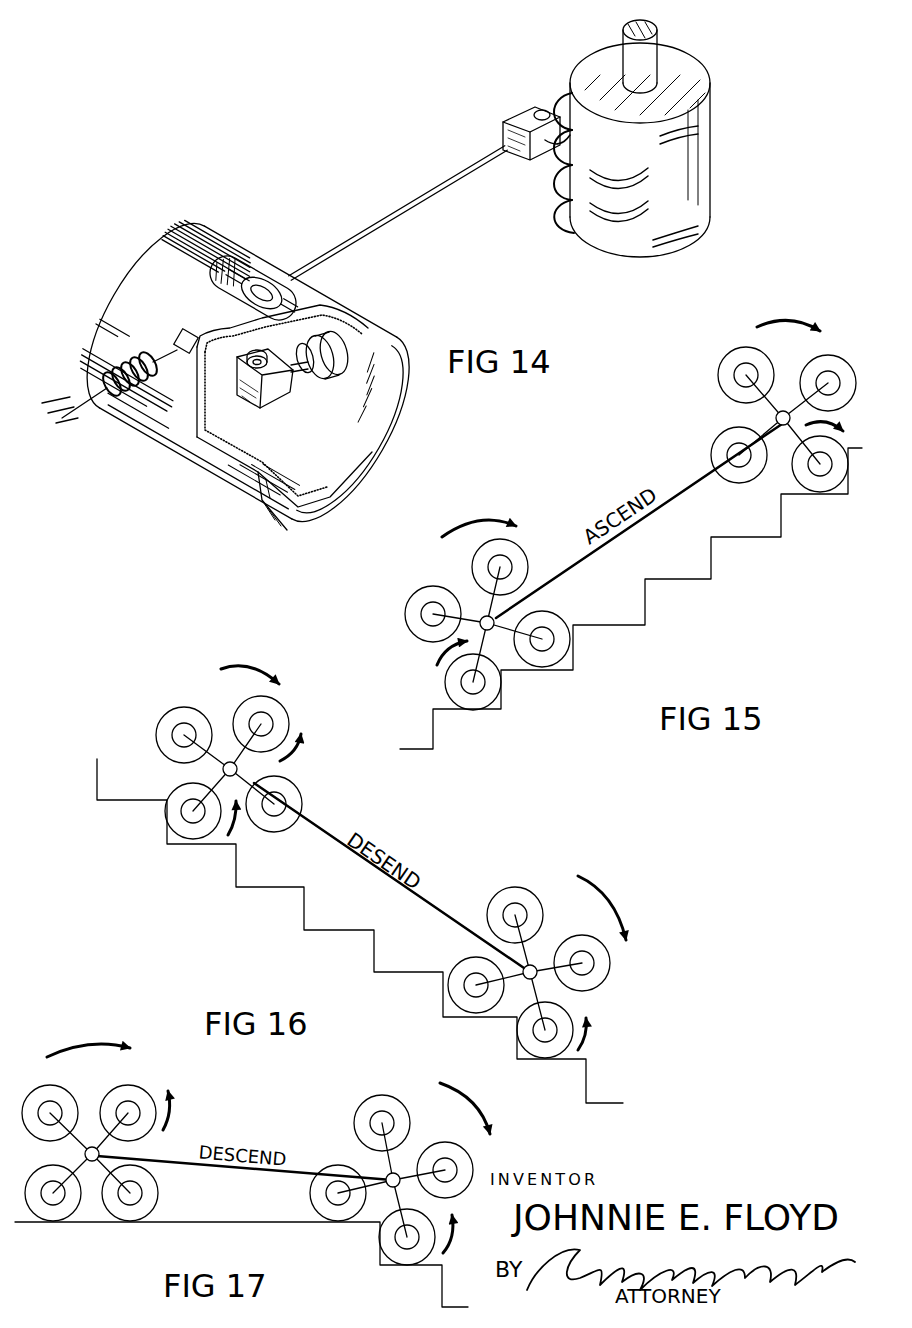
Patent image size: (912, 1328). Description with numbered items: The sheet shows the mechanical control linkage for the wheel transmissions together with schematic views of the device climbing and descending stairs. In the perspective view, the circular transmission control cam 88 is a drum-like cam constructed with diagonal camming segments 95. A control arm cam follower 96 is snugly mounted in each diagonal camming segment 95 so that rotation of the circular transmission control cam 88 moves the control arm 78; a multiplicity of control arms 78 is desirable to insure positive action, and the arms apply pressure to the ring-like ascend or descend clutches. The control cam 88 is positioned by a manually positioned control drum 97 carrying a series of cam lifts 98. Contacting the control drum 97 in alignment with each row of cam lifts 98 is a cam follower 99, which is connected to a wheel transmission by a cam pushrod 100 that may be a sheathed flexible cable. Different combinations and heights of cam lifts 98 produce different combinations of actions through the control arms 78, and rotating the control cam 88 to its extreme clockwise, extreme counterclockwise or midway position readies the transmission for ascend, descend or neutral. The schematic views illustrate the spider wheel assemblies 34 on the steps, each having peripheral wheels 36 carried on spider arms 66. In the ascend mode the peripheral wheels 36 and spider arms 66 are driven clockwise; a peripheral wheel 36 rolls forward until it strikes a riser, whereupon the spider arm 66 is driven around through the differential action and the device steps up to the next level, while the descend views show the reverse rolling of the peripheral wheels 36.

In FIG. 15, the spider wheel assembly 34 is at (612, 517).
In FIG. 16, the spider wheel assembly 34 is at (375, 877).
In FIG. 17, the spider wheel assembly 34 is at (247, 1169).
In FIG. 15, the peripheral wheel 36 is at (535, 541).
In FIG. 16, the peripheral wheel 36 is at (300, 791).
In FIG. 17, the peripheral wheel 36 is at (445, 1142).
In FIG. 15, the spider arm 66 is at (500, 631).
In FIG. 16, the spider arm 66 is at (537, 952).
In FIG. 17, the spider arm 66 is at (76, 1148).
In FIG. 14, the control arm 78 is at (272, 400).
In FIG. 14, the circular transmission control cam 88 is at (238, 372).
In FIG. 14, the diagonal camming segment 95 is at (332, 374).
In FIG. 14, the control arm cam follower 96 is at (306, 374).
In FIG. 14, the control drum 97 is at (640, 138).
In FIG. 14, the cam lift 98 is at (562, 158).
In FIG. 14, the cam follower 99 is at (530, 107).
In FIG. 14, the cam pushrod 100 is at (406, 213).